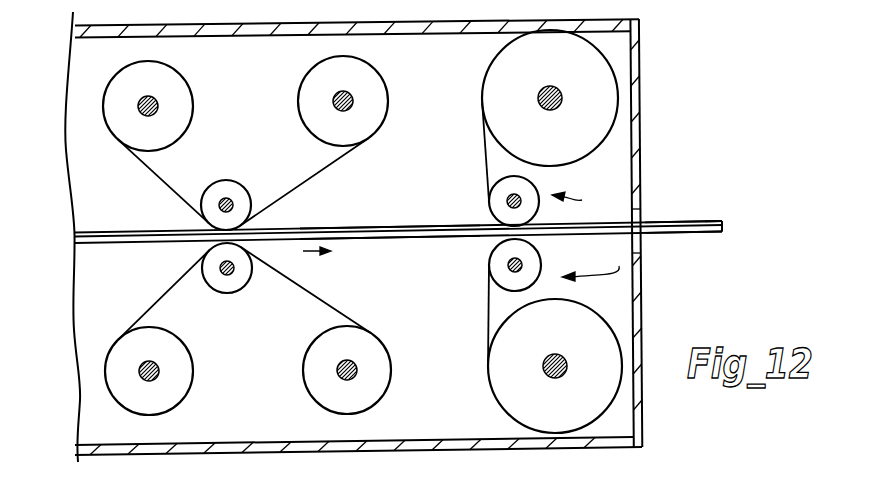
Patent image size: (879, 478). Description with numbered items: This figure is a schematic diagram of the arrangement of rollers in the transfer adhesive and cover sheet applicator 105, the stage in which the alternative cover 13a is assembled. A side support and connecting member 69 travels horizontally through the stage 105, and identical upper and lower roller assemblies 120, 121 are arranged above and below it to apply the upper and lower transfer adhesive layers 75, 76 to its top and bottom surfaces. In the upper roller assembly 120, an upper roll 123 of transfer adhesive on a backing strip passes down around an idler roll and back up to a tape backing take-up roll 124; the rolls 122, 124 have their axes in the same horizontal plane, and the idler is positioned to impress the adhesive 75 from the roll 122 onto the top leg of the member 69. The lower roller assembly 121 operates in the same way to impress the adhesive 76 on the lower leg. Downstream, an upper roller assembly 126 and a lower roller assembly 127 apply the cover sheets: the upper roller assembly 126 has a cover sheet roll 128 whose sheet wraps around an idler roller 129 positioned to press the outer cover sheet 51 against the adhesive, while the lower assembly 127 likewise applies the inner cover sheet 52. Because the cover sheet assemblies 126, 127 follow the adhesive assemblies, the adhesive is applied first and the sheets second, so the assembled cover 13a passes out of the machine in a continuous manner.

The transfer adhesive and cover sheet applicator 105 is at (444, 309).
The left side support and connecting member 69 is at (134, 241).
The upper transfer adhesive layer 75 is at (397, 226).
The lower transfer adhesive layer 76 is at (403, 243).
The outer cover sheet 51 is at (675, 220).
The inner cover sheet 52 is at (673, 236).
The cover 13a is at (698, 235).
The upper roller assembly 120 is at (151, 188).
The lower roller assembly 121 is at (101, 321).
The roll 122 is at (184, 97).
The upper roll of transfer adhesive 123 is at (234, 190).
The tape backing take-up roll 124 is at (376, 117).
The upper roller assembly 126 is at (584, 201).
The lower roller assembly 127 is at (590, 265).
The cover sheet roll 128 is at (498, 73).
The idler roller 129 is at (497, 202).